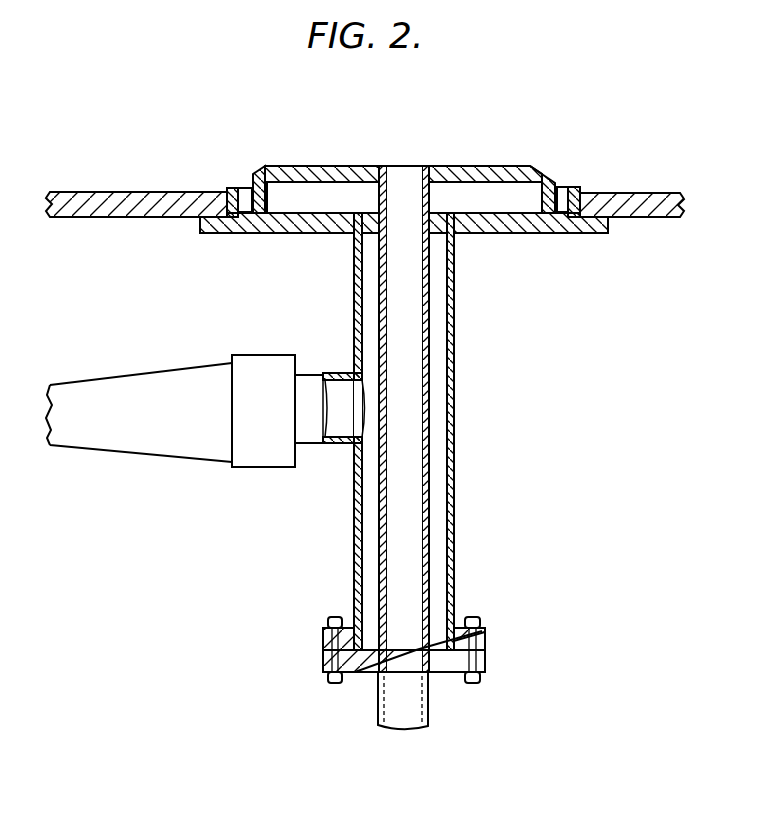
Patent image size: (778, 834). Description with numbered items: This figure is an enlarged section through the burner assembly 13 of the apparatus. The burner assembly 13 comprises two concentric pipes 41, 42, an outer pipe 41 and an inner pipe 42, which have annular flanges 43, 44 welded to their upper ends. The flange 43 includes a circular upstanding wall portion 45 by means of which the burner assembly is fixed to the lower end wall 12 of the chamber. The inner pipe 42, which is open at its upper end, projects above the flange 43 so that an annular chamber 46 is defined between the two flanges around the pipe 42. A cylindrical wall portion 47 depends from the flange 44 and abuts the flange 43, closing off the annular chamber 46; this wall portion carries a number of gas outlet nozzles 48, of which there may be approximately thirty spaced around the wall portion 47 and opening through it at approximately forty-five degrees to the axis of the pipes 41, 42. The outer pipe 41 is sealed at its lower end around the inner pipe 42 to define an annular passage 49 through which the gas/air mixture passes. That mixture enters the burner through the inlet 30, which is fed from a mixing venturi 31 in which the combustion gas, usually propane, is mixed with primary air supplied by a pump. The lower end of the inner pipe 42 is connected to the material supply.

The lower end wall 12 is at (72, 208).
The burner assembly 13 is at (431, 446).
The inlet 30 is at (313, 378).
The mixing venturi 31 is at (133, 383).
The pipe 41 is at (454, 433).
The pipe 42 is at (429, 463).
The annular flange 43 is at (253, 225).
The annular flange 44 is at (282, 174).
The circular upstanding wall portion 45 is at (232, 200).
The annular chamber 46 is at (327, 193).
The cylindrical wall portion 47 is at (253, 178).
The gas outlet nozzle 48 is at (555, 176).
The annular passage 49 is at (437, 523).